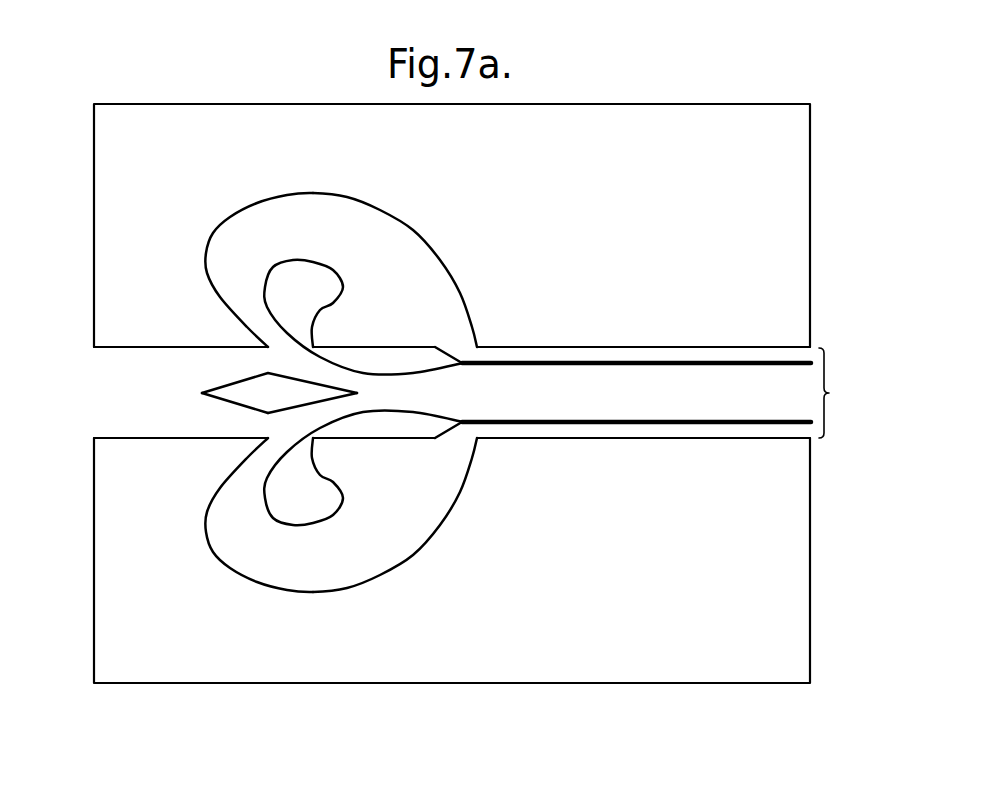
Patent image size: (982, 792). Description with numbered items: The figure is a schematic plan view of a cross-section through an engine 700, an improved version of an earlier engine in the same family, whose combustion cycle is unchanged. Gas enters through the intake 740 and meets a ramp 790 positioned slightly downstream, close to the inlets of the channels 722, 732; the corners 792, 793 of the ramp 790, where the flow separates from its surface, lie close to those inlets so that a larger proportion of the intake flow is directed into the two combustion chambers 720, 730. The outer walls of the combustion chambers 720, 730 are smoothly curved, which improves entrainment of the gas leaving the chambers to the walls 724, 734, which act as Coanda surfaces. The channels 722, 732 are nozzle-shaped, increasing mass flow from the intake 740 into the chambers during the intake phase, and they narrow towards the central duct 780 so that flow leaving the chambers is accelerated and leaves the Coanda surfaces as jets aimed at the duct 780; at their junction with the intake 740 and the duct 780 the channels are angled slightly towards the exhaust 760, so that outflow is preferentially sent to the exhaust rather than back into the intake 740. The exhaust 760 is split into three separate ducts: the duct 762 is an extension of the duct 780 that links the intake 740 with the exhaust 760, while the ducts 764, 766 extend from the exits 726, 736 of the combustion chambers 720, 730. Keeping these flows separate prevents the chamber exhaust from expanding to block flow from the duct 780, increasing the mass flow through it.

The engine 700 is at (775, 97).
The combustion chamber 720 is at (385, 307).
The channel 722 is at (247, 267).
The wall 724 is at (302, 260).
The exit 726 is at (458, 348).
The combustion chamber 730 is at (398, 525).
The channel 732 is at (233, 510).
The wall 734 is at (307, 527).
The exit 736 is at (453, 440).
The intake 740 is at (123, 404).
The exhaust 760 is at (846, 393).
The exhaust duct 762 is at (713, 400).
The exhaust duct 764 is at (780, 368).
The exhaust duct 766 is at (633, 420).
The duct 780 is at (400, 398).
The ramp 790 is at (228, 409).
The corner 792 is at (237, 387).
The corner 793 is at (287, 417).